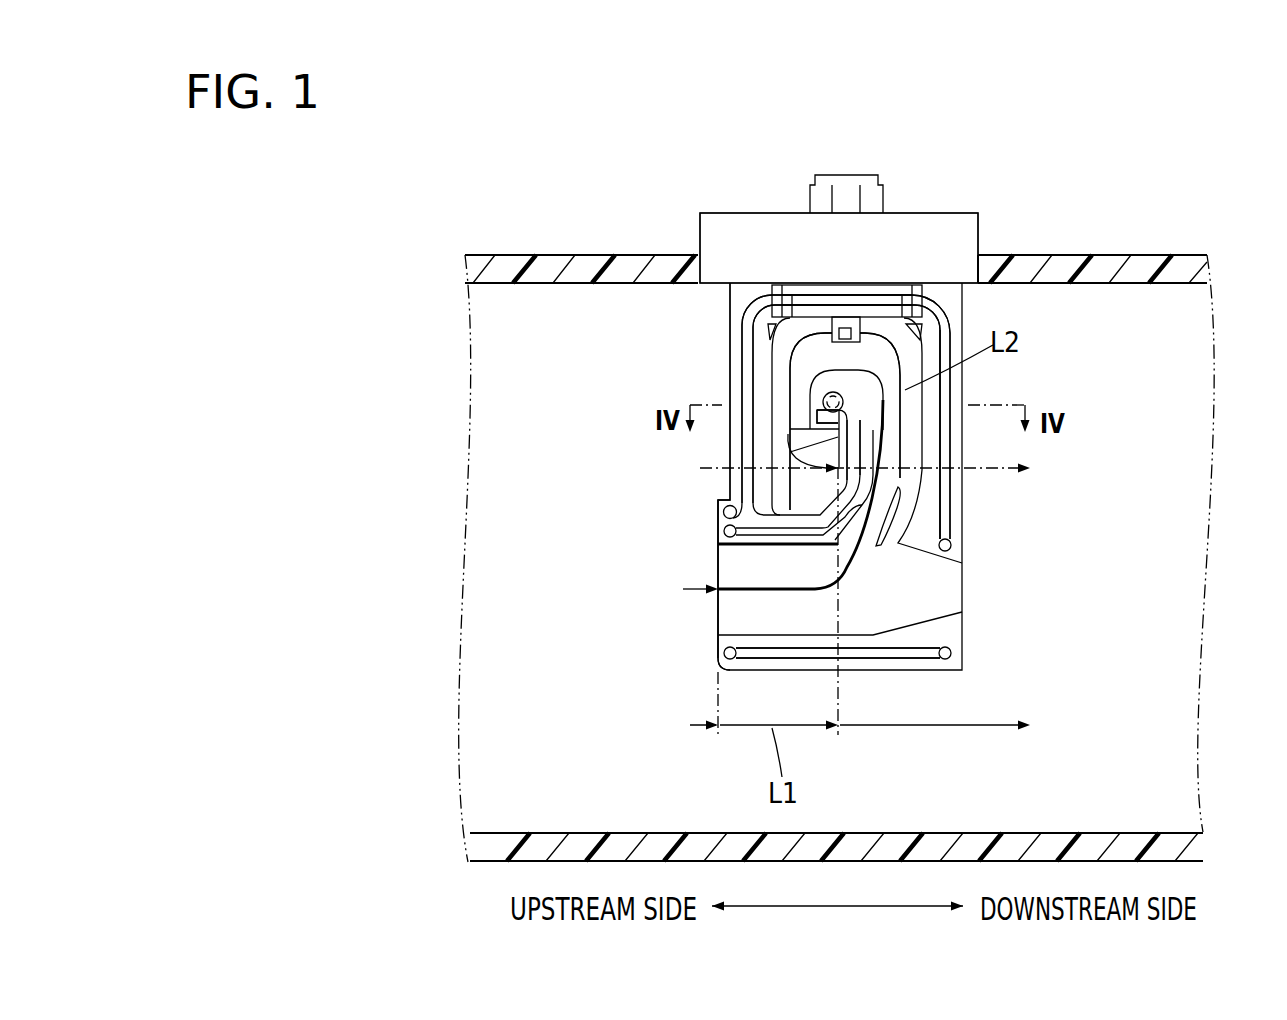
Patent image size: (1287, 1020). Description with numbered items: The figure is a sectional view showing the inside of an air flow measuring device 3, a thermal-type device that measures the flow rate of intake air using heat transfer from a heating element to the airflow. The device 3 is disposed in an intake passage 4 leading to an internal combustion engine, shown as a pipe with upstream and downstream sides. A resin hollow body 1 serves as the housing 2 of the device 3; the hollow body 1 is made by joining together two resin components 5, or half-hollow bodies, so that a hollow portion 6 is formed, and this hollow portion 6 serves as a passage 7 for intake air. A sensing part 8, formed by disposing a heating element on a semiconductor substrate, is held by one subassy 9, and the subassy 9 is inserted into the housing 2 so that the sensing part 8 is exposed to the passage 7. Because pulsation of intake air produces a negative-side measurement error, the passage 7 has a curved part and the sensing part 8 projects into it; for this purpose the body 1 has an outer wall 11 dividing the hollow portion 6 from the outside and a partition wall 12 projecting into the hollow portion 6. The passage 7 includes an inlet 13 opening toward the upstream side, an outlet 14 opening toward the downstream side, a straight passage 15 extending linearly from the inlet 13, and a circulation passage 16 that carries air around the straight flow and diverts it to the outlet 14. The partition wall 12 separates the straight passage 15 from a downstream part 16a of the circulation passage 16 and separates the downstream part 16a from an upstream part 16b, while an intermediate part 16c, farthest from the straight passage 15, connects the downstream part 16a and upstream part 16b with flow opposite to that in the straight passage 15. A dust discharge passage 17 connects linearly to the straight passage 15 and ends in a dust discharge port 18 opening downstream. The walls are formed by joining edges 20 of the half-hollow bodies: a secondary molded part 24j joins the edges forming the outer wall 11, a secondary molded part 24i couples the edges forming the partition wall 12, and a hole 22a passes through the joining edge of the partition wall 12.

The resin hollow body 1 is at (717, 353).
The housing 2 is at (647, 411).
The air flow measuring device 3 is at (1003, 187).
The intake passage 4 is at (508, 737).
The resin components (half-hollow bodies) 5 is at (694, 228).
The hollow portion 6 is at (915, 386).
The passage 7 is at (985, 434).
The sensing part 8 is at (849, 328).
The subassy 9 is at (848, 177).
The outer wall 11 is at (853, 499).
The partition wall 12 is at (920, 414).
The inlet 13 is at (718, 618).
The outlet 14 is at (853, 465).
The straight passage 15 is at (767, 563).
The circulation passage 16 is at (873, 339).
The downstream part of the circulation passage 16a is at (778, 390).
The upstream part of the circulation passage 16b is at (913, 398).
The intermediate part of the circulation passage 16c is at (843, 356).
The dust discharge passage 17 is at (917, 570).
The dust discharge port 18 is at (962, 612).
The joining edge 20 is at (733, 436).
The hole 22a is at (838, 396).
The secondary molded part (partition wall) 24i is at (899, 507).
The secondary molded part (outer wall) 24j is at (735, 465).